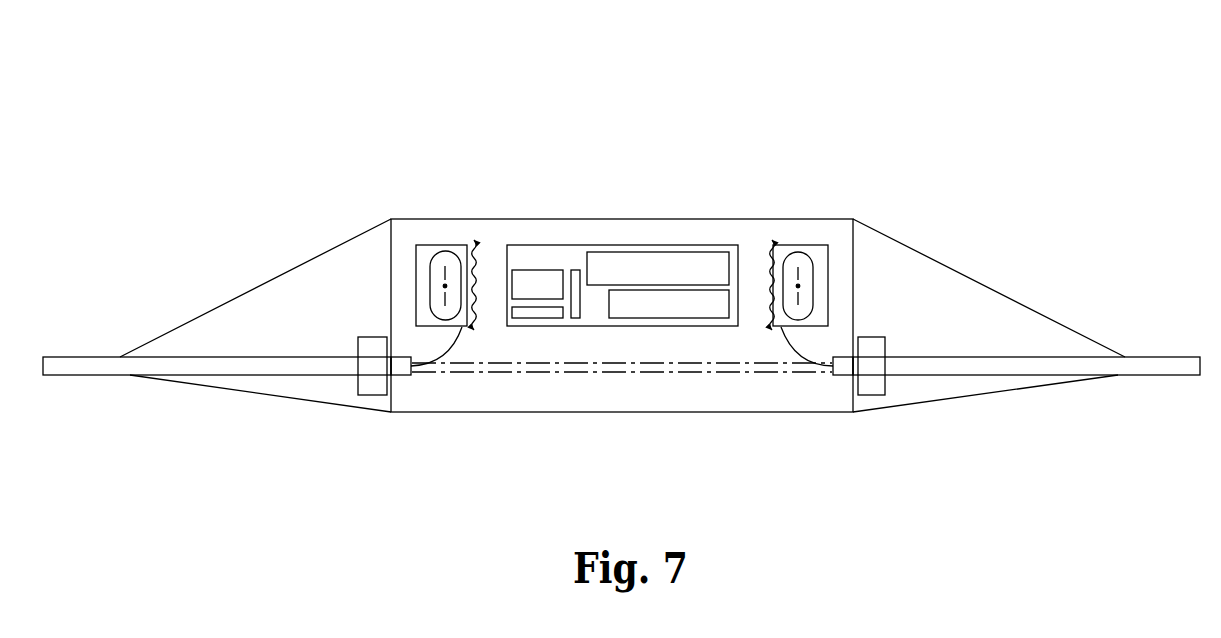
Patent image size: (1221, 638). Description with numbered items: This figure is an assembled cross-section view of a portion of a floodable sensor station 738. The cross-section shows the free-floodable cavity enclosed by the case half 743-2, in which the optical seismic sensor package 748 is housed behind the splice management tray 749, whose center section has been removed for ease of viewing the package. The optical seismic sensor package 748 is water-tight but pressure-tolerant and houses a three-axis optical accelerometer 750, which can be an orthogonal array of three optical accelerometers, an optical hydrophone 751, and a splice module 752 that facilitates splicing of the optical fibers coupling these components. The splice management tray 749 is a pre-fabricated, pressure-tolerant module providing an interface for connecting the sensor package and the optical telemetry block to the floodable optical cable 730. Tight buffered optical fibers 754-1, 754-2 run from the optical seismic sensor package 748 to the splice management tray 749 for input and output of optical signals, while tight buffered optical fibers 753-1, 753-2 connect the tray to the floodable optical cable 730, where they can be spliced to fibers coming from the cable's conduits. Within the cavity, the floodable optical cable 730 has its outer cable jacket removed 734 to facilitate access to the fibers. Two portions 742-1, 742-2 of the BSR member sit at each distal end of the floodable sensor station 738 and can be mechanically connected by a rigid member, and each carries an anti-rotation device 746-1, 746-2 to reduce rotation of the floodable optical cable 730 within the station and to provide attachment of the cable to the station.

The floodable sensor station 738 is at (243, 88).
The floodable optical cable 730 is at (80, 356).
The outer cable jacket removed 734 is at (494, 378).
The portion of the BSR member 742-1 is at (258, 287).
The portion of the BSR member 742-2 is at (988, 287).
The case half 743-2 is at (712, 218).
The anti-rotation device 746-1 is at (372, 398).
The anti-rotation device 746-2 is at (872, 398).
The optical seismic sensor package 748 is at (622, 244).
The splice management tray 749 is at (771, 333).
The three-axis optical accelerometer 750 is at (542, 305).
The optical hydrophone 751 is at (683, 316).
The splice module 752 is at (673, 280).
The tight buffered optical fiber 753-1 is at (450, 362).
The tight buffered optical fiber 753-2 is at (794, 356).
The tight buffered optical fiber 754-1 is at (470, 288).
The tight buffered optical fiber 754-2 is at (776, 288).